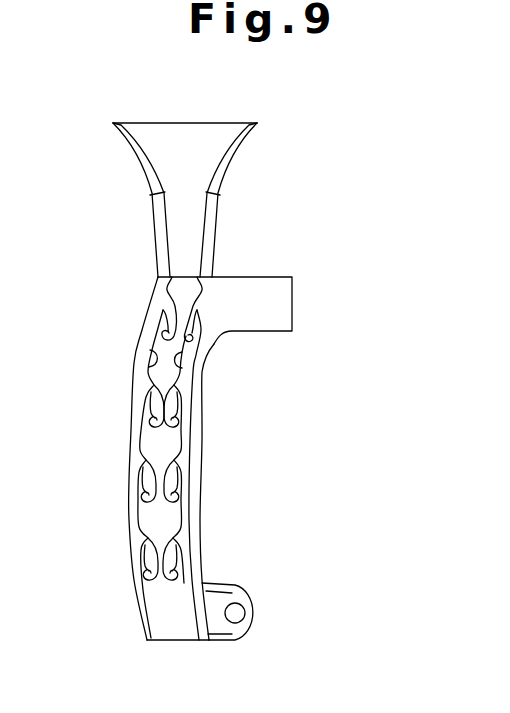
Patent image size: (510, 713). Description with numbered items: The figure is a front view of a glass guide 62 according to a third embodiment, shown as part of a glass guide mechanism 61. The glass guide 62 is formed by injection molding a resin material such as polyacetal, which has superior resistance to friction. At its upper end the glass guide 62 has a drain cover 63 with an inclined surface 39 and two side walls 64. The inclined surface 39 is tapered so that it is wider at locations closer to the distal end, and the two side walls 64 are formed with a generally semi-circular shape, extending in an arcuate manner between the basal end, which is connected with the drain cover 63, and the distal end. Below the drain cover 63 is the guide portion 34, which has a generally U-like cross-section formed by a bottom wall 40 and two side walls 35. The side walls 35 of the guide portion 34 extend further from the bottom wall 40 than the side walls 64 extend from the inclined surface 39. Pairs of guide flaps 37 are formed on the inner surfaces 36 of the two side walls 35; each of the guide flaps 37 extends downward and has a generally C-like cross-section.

The guide portion 34 is at (190, 442).
The side walls 35 is at (131, 517).
The inner surfaces 36 is at (155, 350).
The guide flaps 37 is at (174, 420).
The inclined surface 39 is at (181, 128).
The bottom wall 40 is at (162, 637).
The glass guide mechanism 61 is at (377, 134).
The glass guide 62 is at (400, 317).
The drain cover 63 is at (237, 152).
The side walls 64 is at (152, 194).